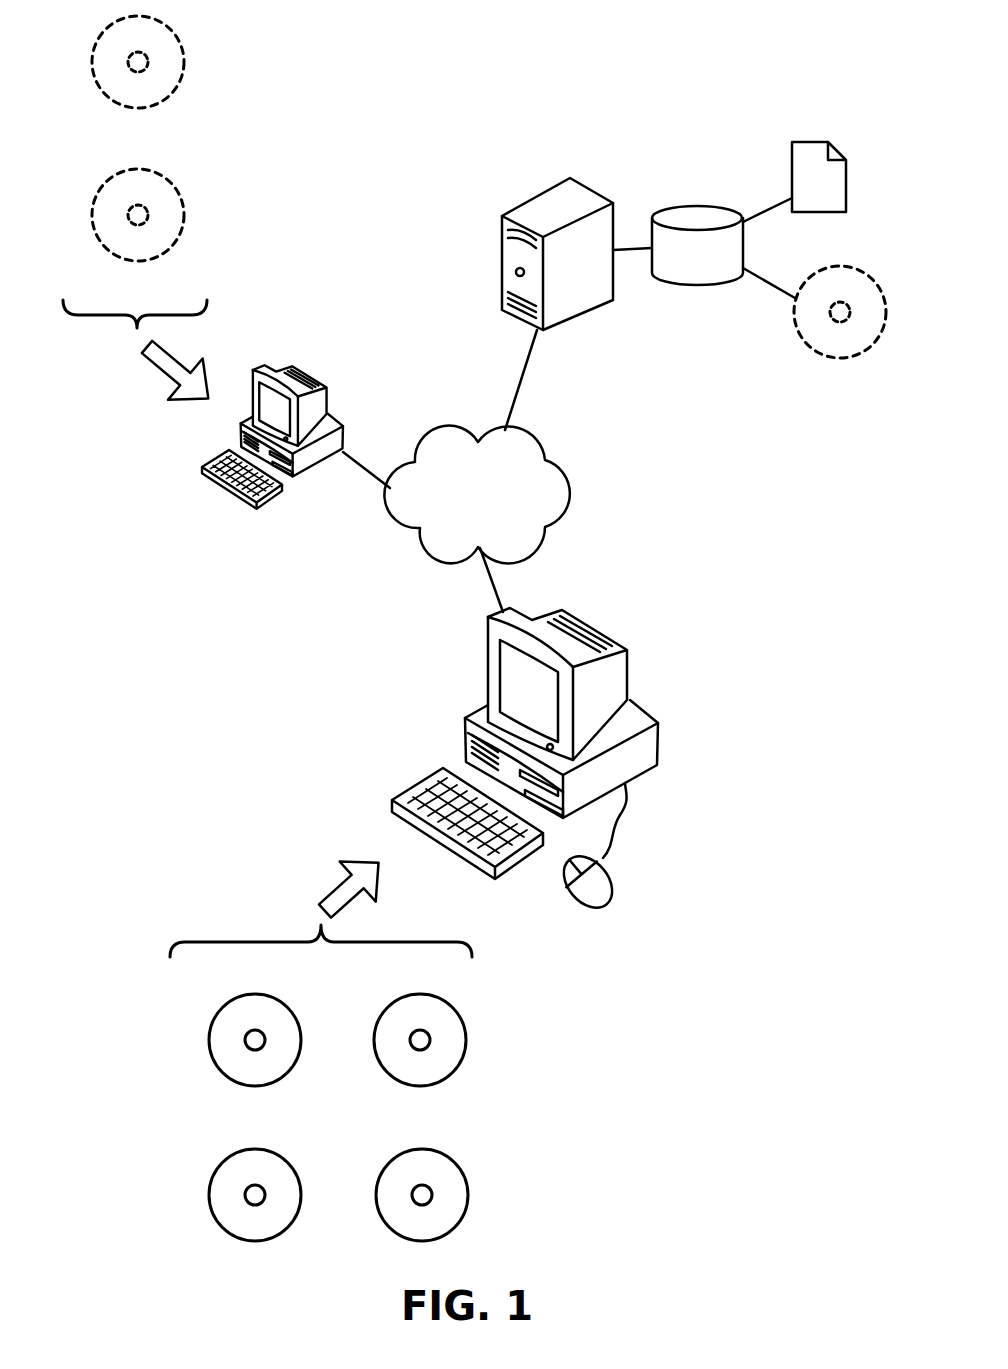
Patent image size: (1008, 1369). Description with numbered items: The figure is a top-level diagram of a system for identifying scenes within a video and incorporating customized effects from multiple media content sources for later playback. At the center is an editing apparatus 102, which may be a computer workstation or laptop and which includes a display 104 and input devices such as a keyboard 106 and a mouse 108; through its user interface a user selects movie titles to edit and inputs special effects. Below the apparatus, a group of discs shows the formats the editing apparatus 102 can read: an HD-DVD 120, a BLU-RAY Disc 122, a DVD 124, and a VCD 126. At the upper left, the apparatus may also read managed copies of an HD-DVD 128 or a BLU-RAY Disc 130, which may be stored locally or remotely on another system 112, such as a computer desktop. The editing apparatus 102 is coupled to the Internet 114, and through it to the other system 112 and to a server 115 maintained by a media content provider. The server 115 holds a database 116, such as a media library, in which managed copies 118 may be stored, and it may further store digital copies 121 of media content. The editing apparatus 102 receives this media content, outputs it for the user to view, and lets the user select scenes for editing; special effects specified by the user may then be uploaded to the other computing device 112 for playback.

The editing apparatus 102 is at (526, 727).
The display 104 is at (488, 688).
The keyboard 106 is at (455, 850).
The mouse 108 is at (565, 896).
The another system 112 is at (325, 349).
The Internet 114 is at (466, 525).
The server 115 is at (592, 162).
The database 116 is at (683, 259).
The managed copy 118 is at (850, 267).
The High Definition DVD (HD-DVD) 120 is at (232, 1000).
The digital copies 121 is at (805, 195).
The BLU-RAY Disc 122 is at (232, 1155).
The Digital Video Disc (DVD) 124 is at (392, 1000).
The video CD (VCD) 126 is at (392, 1157).
The managed copy of an HD-DVD 128 is at (115, 25).
The managed copy of a BLU-RAY Disc 130 is at (115, 177).